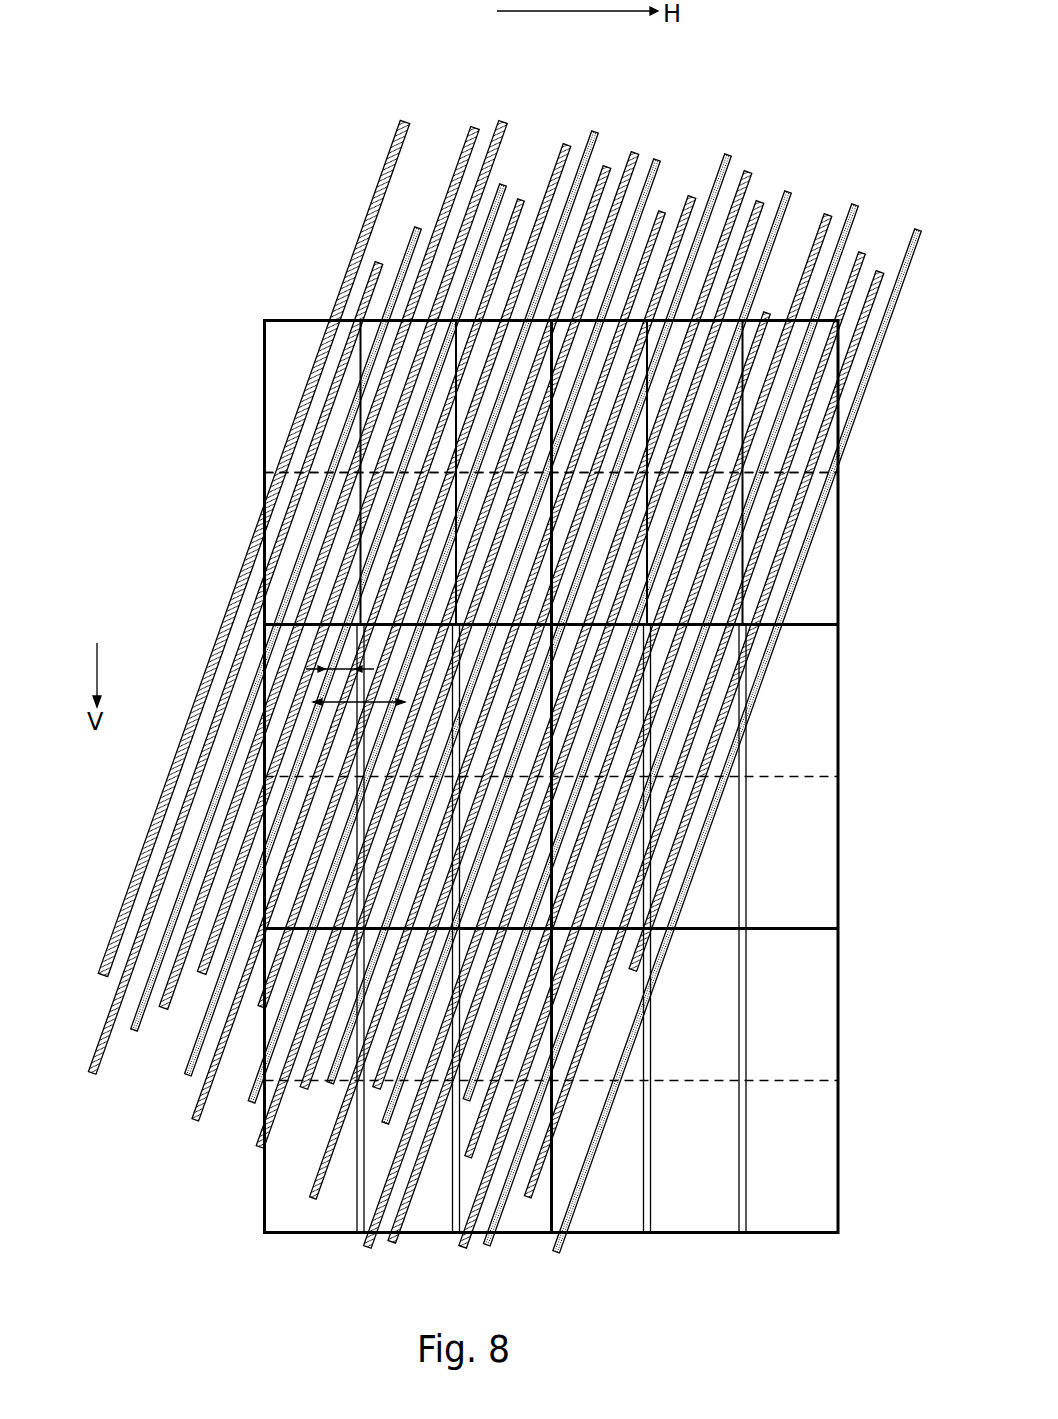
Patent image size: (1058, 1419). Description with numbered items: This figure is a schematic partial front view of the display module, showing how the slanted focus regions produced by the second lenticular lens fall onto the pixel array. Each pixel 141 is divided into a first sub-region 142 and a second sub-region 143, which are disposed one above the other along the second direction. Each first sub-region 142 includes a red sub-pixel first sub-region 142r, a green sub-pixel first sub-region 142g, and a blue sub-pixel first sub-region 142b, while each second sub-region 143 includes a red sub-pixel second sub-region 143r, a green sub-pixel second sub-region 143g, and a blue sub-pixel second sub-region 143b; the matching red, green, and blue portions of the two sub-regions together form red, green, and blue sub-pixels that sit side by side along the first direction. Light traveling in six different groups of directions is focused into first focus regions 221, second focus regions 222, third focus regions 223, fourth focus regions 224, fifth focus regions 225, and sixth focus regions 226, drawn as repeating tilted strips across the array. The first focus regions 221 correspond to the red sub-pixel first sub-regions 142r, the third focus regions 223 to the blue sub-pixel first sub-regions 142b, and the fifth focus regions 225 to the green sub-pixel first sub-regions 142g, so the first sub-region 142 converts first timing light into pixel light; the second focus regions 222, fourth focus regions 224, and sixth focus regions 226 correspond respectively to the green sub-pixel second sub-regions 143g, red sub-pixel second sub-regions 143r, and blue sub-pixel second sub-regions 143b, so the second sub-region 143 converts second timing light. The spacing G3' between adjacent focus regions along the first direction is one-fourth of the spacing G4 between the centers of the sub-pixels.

The pixel 141 is at (93, 353).
The first sub-region 142 is at (160, 325).
The second sub-region 143 is at (160, 500).
The blue sub-pixel first sub-region 142b is at (507, 345).
The green sub-pixel first sub-region 142g is at (397, 385).
The red sub-pixel first sub-region 142r is at (282, 398).
The blue sub-pixel second sub-region 143b is at (497, 508).
The green sub-pixel second sub-region 143g is at (410, 552).
The red sub-pixel second sub-region 143r is at (307, 573).
The first focus region 221 is at (384, 173).
The second focus region 222 is at (376, 266).
The third focus region 223 is at (393, 290).
The fourth focus region 224 is at (462, 160).
The fifth focus region 225 is at (493, 140).
The sixth focus region 226 is at (503, 183).
The spacing between adjacent focus regions G3' is at (268, 646).
The spacing between centers of sub-pixels G4 is at (345, 701).